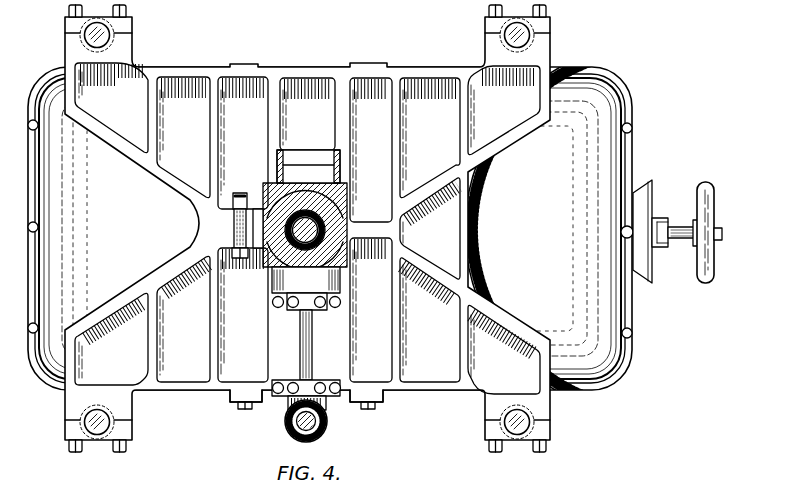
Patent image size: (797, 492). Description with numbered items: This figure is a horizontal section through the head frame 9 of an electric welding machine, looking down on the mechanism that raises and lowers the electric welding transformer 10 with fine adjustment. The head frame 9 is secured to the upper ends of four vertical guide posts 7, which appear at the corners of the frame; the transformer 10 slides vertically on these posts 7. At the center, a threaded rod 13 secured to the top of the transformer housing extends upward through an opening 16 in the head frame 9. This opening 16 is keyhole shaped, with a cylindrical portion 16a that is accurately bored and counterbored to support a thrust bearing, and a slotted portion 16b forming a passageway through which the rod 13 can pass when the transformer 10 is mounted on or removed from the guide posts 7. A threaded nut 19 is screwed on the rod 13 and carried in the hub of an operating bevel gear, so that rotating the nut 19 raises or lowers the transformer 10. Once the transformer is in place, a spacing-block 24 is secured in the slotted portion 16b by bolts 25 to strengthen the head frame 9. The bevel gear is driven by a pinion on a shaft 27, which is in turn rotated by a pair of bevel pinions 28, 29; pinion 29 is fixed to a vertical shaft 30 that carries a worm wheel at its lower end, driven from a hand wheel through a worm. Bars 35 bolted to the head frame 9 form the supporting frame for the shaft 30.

The guide posts 7 is at (85, 38).
The head frame 9 is at (425, 380).
The electric welding transformer 10 is at (600, 353).
The threaded rod 13 is at (338, 218).
The opening 16 is at (318, 192).
The cylindrical portion 16a is at (322, 248).
The slotted portion 16b is at (262, 225).
The threaded nut 19 is at (302, 190).
The spacing-block 24 is at (230, 222).
The bolts 25 is at (242, 259).
The shaft 27 is at (309, 342).
The bevel pinion 28 is at (326, 408).
The bevel pinion 29 is at (285, 424).
The vertical shaft 30 is at (310, 432).
The bars 35 is at (232, 400).